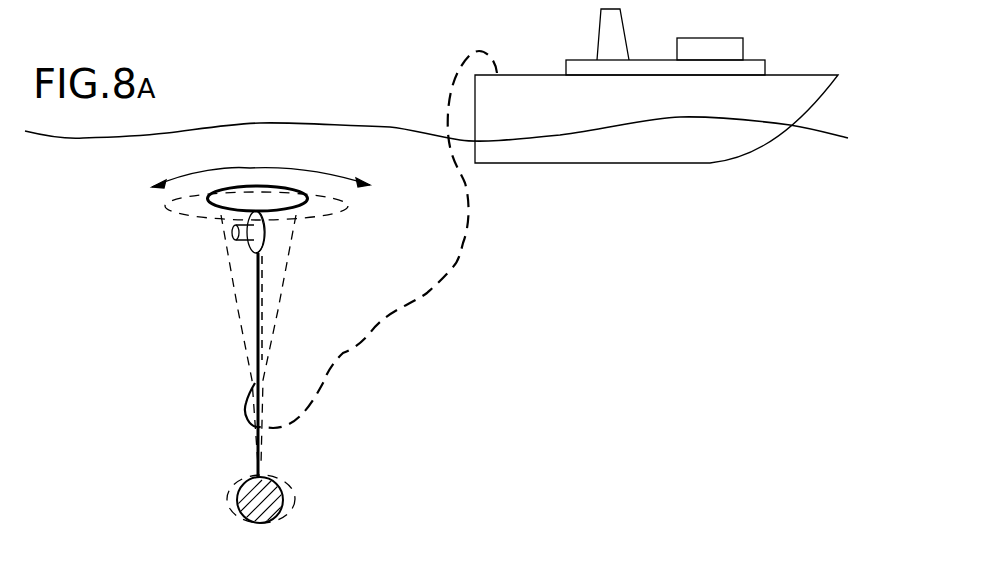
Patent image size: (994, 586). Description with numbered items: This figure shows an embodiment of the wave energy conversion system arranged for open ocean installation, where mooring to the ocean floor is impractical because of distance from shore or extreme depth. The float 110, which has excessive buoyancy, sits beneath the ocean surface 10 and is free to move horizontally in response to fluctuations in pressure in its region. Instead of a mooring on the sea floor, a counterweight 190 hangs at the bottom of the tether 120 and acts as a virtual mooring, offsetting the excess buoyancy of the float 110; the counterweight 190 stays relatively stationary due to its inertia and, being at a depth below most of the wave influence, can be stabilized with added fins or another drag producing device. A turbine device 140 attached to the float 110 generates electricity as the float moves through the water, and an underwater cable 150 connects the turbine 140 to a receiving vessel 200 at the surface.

The ocean surface 10 is at (315, 120).
The float 110 is at (220, 206).
The tether 120 is at (258, 462).
The turbine device 140 is at (243, 247).
The underwater cable 150 is at (453, 267).
The counterweight 190 is at (240, 500).
The receiving vessel 200 is at (788, 75).